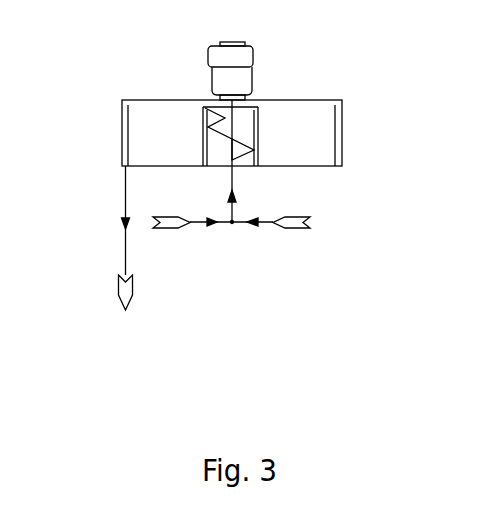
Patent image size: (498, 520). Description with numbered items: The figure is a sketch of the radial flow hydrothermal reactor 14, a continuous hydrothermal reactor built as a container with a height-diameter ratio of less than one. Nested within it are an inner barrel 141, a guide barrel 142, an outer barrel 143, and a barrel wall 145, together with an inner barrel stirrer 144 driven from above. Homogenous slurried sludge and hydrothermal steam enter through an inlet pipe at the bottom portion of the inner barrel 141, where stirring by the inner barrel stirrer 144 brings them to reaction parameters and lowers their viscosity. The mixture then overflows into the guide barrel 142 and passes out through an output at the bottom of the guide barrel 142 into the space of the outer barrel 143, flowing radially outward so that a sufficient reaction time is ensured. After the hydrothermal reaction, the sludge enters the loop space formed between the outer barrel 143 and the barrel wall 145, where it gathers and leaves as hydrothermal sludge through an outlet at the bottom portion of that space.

The radial flow hydrothermal reactor 14 is at (296, 269).
The inner barrel 141 is at (311, 92).
The guide barrel 142 is at (309, 112).
The outer barrel 143 is at (268, 133).
The inner barrel stirrer 144 is at (186, 103).
The barrel wall 145 is at (117, 235).